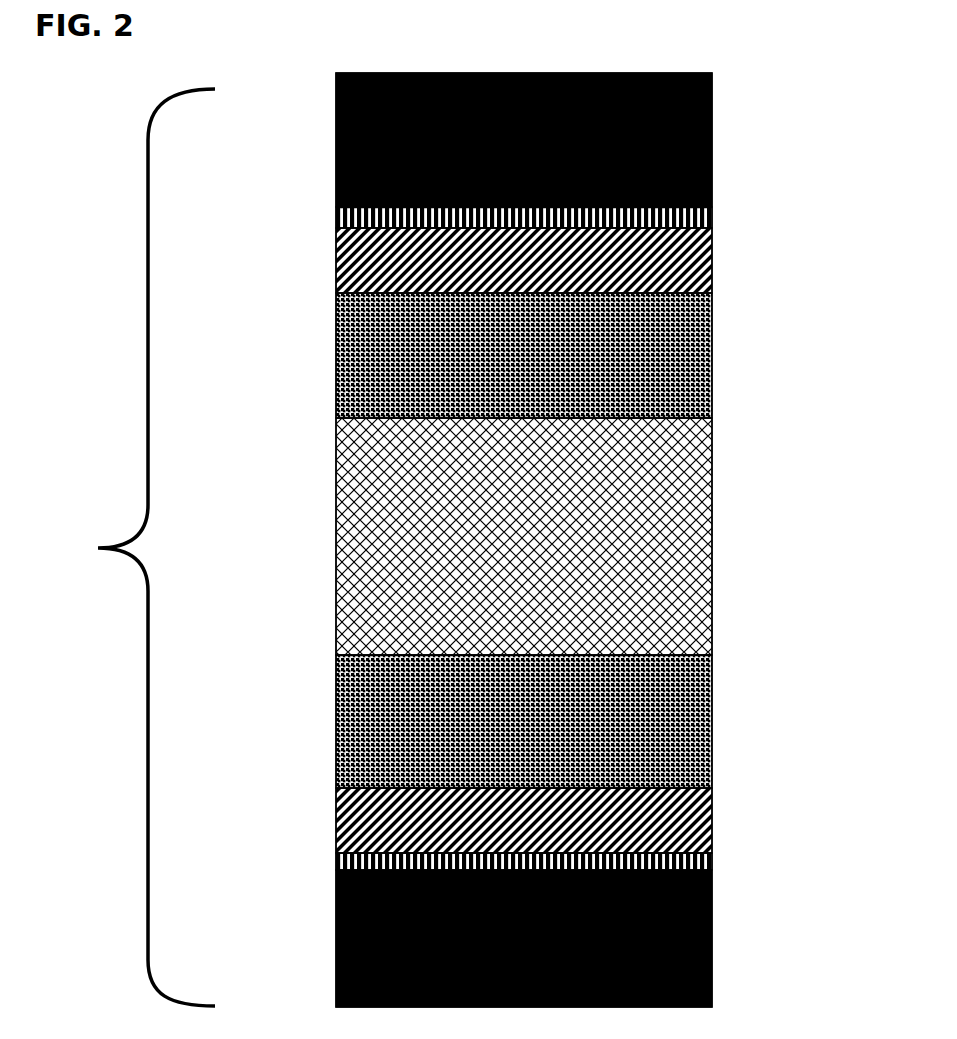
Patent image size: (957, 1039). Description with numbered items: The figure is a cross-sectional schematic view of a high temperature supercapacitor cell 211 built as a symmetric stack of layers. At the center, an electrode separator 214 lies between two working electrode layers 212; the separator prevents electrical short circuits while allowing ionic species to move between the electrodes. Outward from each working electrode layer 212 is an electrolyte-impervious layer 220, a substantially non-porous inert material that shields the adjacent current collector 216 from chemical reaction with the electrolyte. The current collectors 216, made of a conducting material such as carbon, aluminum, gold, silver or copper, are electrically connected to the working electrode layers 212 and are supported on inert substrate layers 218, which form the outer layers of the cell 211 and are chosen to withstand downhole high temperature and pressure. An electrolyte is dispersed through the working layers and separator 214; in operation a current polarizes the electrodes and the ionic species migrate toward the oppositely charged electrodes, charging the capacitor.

The supercapacitor cell 211 is at (130, 547).
The working electrode layers 212 is at (724, 357).
The electrode separator 214 is at (724, 530).
The current collectors 216 is at (724, 220).
The inert substrate layers 218 is at (328, 140).
The electrolyte-impervious layers 220 is at (328, 262).